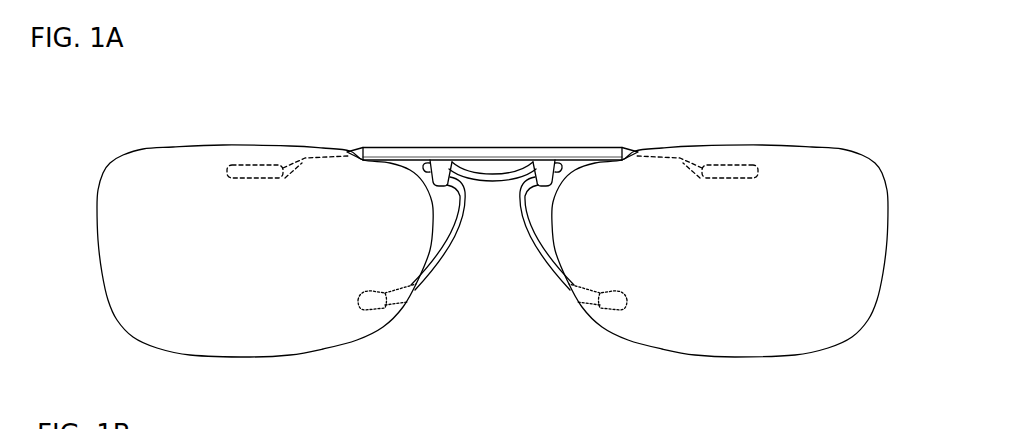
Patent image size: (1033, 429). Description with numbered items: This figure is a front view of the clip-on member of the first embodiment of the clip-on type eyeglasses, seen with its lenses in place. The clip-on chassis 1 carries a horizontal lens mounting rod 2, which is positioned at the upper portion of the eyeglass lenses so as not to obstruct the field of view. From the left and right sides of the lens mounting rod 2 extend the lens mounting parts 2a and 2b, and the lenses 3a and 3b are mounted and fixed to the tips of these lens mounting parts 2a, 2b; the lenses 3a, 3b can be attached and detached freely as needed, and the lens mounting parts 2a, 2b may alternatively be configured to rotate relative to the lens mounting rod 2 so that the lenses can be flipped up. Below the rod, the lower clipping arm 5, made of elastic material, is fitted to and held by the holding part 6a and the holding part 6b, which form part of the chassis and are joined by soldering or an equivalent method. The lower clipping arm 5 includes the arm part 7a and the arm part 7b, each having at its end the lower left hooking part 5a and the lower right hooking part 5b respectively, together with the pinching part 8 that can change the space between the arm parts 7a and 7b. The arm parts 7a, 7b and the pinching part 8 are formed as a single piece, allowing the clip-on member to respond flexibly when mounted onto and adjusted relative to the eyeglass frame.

The clip-on chassis 1 is at (613, 118).
The lens mounting rod 2 is at (495, 157).
The lens mounting part 2a is at (290, 170).
The lens mounting part 2b is at (690, 170).
The lens 3a is at (188, 165).
The lens 3b is at (800, 163).
The lower clipping arm 5 is at (495, 327).
The lower left hooking part 5a is at (398, 308).
The lower right hooking part 5b is at (588, 310).
The holding part 6a is at (436, 158).
The holding part 6b is at (552, 160).
The arm part 7a is at (443, 263).
The arm part 7b is at (543, 263).
The pinching part 8 is at (495, 176).